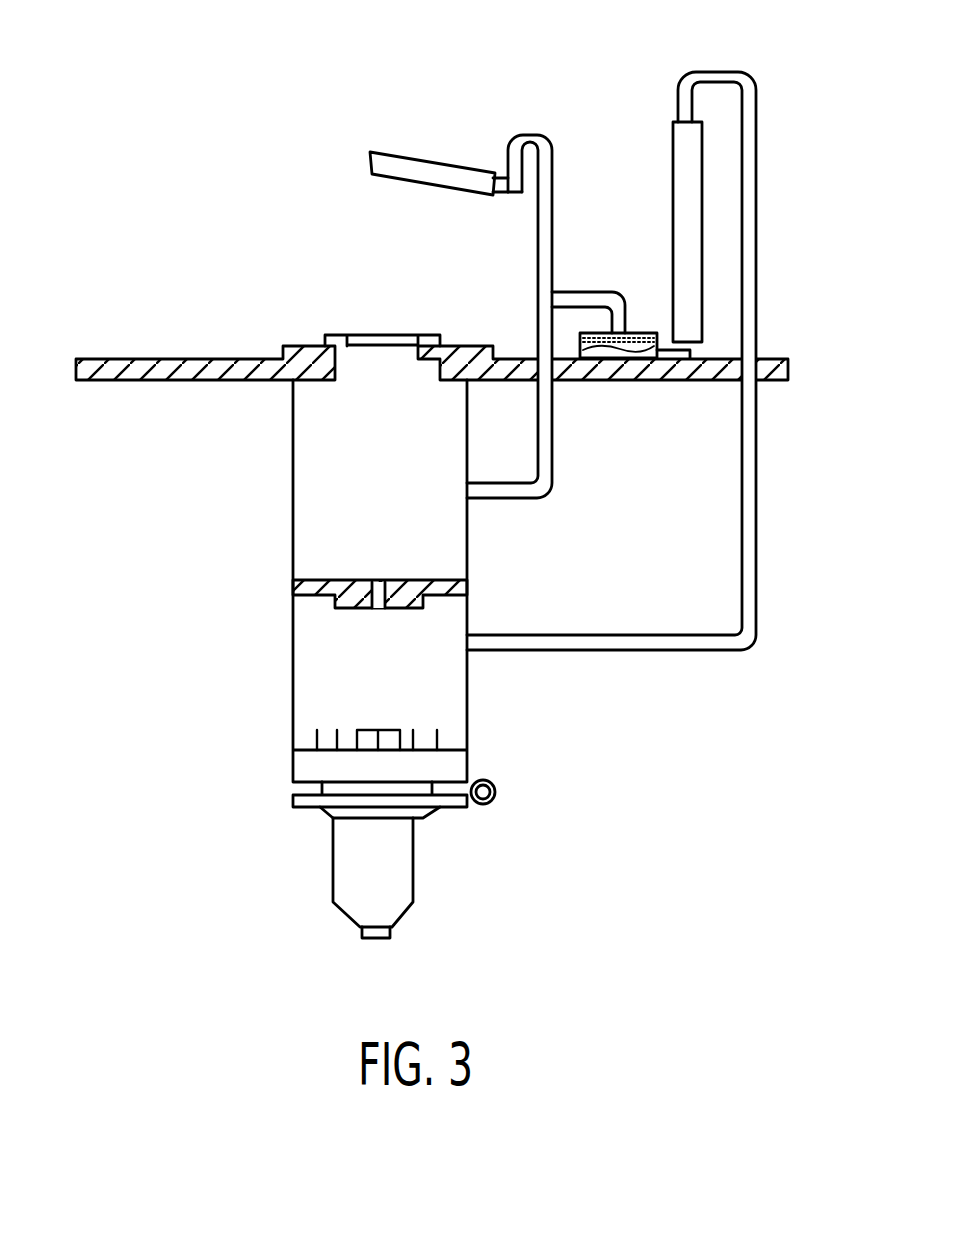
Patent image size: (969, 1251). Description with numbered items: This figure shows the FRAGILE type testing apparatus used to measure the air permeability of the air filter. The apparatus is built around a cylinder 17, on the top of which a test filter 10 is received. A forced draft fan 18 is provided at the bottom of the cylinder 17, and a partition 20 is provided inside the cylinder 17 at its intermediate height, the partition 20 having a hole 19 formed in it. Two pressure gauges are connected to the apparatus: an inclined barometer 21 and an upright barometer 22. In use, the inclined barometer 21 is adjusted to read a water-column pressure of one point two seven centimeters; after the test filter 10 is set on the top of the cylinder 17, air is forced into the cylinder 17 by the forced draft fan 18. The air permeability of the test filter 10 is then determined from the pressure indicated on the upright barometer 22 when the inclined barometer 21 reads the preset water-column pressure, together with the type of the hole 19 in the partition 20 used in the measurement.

The test filter 10 is at (287, 347).
The cylinder 17 is at (293, 657).
The forced draft fan 18 is at (298, 806).
The hole 19 is at (383, 606).
The partition 20 is at (322, 580).
The inclined barometer 21 is at (375, 175).
The upright barometer 22 is at (673, 125).